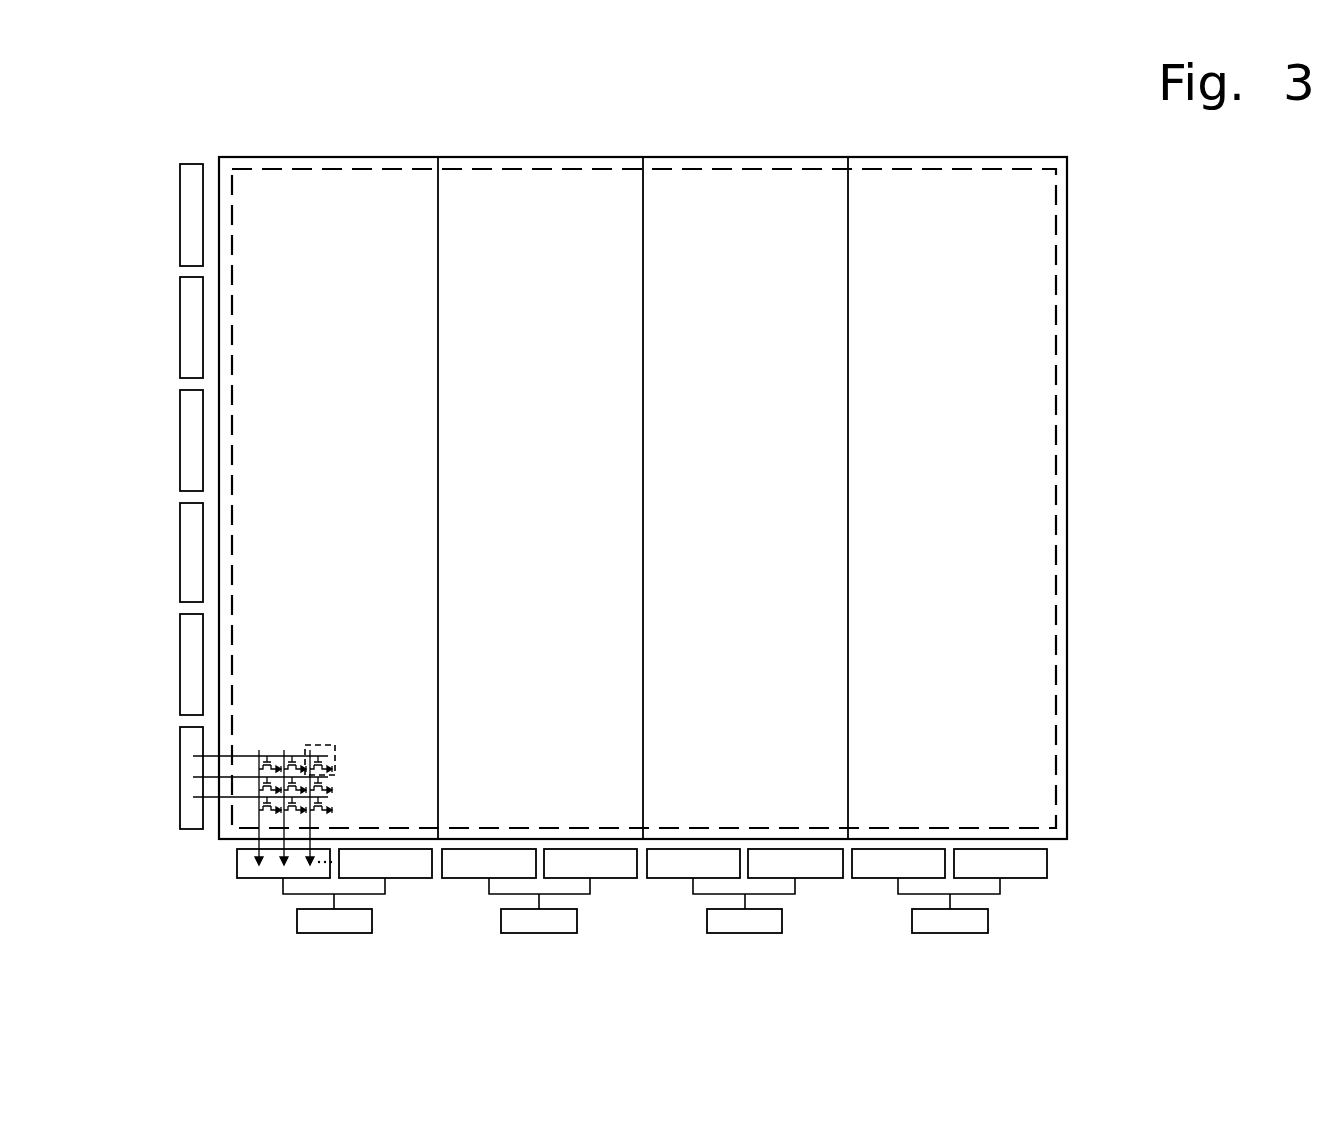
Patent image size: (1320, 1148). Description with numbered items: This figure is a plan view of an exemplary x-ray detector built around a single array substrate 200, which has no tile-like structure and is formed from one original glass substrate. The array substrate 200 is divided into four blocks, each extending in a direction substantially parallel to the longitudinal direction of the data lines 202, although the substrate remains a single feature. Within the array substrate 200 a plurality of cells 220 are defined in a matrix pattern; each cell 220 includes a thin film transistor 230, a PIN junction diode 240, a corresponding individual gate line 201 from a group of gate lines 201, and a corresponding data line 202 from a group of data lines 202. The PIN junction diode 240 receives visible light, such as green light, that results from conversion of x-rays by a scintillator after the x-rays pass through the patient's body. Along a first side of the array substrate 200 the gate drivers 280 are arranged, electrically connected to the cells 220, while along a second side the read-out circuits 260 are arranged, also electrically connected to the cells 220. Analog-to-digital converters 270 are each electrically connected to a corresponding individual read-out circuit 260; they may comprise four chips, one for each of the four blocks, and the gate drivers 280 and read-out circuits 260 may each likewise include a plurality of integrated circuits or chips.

The array substrate 200 is at (1056, 258).
The gate line 201 is at (247, 754).
The data line 202 is at (258, 760).
The cell 220 is at (335, 746).
The thin film transistor 230 is at (268, 755).
The PIN junction diode 240 is at (280, 754).
The read-out circuit 260 is at (237, 858).
The analog-to-digital converter 270 is at (297, 914).
The gate driver 280 is at (180, 213).